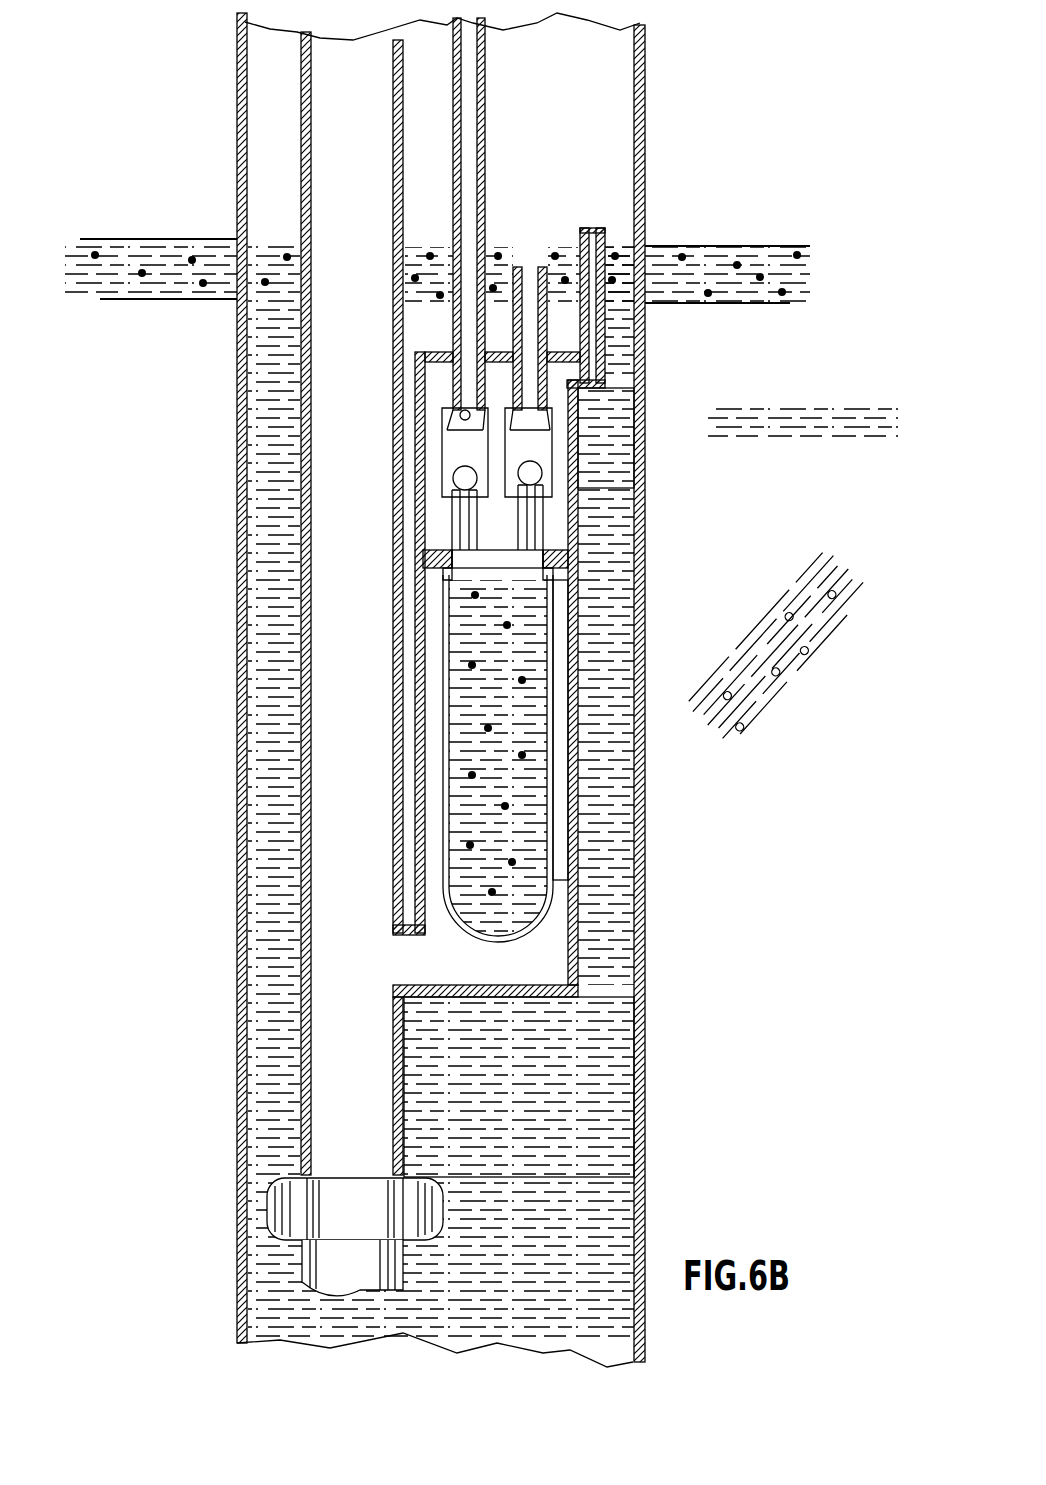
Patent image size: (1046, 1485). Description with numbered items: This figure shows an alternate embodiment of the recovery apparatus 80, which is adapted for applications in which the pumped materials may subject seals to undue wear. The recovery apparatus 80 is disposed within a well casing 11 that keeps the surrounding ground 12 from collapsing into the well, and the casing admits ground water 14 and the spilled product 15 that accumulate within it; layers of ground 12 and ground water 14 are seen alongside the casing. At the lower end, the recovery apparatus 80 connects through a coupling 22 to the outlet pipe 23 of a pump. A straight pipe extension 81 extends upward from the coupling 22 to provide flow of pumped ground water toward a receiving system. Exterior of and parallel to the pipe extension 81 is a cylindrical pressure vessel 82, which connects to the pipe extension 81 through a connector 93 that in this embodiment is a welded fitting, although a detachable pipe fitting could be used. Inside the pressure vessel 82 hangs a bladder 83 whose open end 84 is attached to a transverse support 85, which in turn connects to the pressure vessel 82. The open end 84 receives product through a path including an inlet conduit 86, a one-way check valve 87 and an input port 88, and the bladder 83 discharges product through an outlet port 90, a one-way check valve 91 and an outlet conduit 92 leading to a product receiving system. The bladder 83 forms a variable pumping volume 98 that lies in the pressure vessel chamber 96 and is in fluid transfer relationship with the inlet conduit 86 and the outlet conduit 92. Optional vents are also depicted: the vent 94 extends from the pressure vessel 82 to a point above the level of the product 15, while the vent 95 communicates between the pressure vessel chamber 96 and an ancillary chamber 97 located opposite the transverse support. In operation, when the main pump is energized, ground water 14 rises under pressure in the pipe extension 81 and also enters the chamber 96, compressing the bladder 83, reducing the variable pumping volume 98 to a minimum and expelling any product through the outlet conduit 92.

The well casing 11 is at (644, 758).
The ground 12 is at (785, 613).
The ground water 14 is at (820, 404).
The product 15 is at (748, 247).
The coupling 22 is at (443, 1202).
The outlet pipe 23 is at (423, 1247).
The recovery apparatus 80 is at (656, 219).
The pipe extension 81 is at (311, 270).
The pressure vessel 82 is at (577, 918).
The bladder 83 is at (548, 843).
The open end 84 is at (553, 573).
The transverse support 85 is at (560, 548).
The inlet conduit 86 is at (545, 250).
The check valve 87 is at (537, 442).
The input port 88 is at (543, 520).
The outlet port 90 is at (455, 527).
The check valve 91 is at (452, 446).
The outlet conduit 92 is at (393, 298).
The connector 93 is at (412, 1002).
The vent 94 is at (628, 333).
The vent 95 is at (421, 553).
The pressure vessel chamber 96 is at (558, 708).
The ancillary chamber 97 is at (628, 381).
The variable pumping volume 98 is at (527, 800).